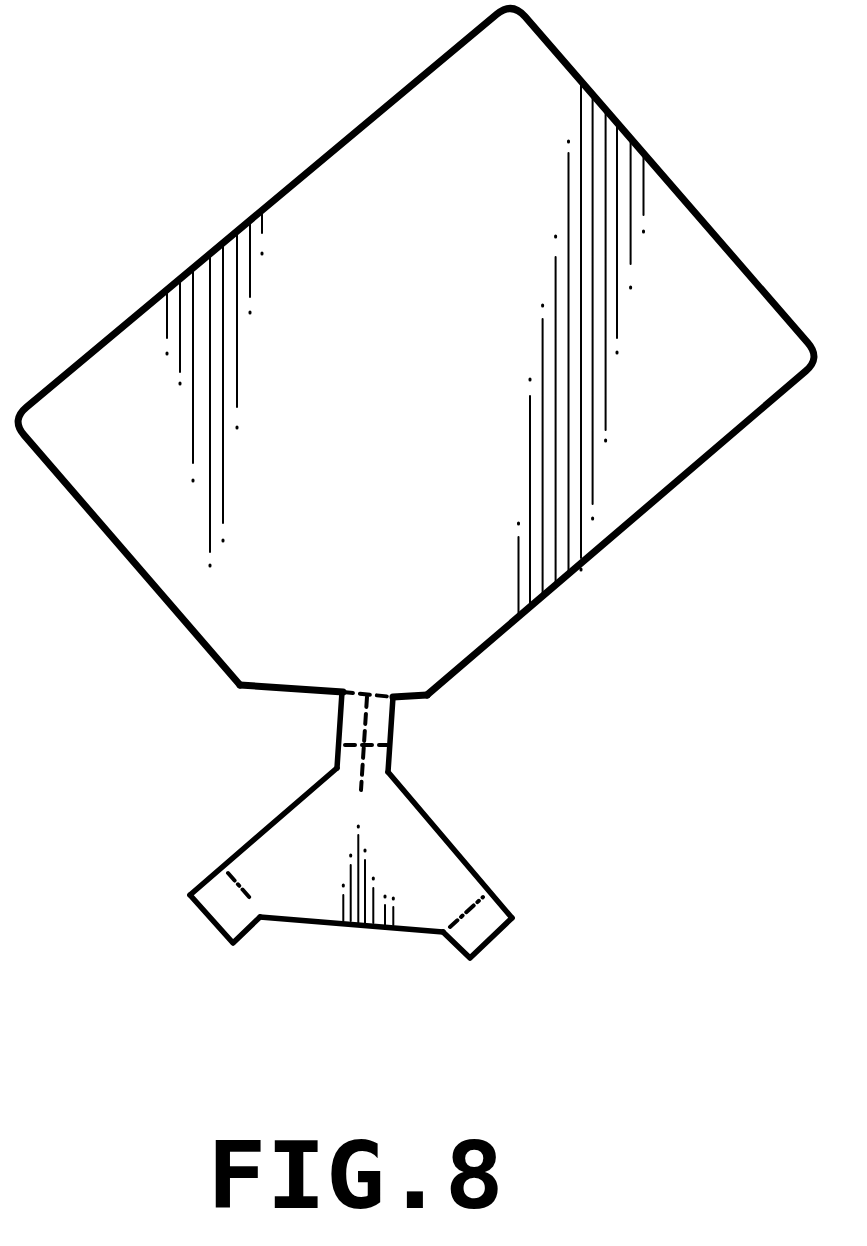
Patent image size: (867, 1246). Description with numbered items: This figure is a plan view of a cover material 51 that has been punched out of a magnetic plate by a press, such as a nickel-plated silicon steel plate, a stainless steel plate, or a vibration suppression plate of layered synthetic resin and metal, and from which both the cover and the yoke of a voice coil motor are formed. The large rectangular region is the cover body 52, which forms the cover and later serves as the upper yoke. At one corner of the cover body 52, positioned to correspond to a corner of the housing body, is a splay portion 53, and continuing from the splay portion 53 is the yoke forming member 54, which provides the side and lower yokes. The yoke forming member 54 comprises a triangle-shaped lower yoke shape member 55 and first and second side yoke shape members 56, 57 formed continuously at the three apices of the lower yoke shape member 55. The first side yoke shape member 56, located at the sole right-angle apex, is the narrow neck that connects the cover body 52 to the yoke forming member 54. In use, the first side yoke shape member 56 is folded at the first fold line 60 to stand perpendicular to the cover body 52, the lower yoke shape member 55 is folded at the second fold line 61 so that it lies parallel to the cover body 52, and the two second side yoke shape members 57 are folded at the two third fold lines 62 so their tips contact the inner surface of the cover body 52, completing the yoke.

The cover material 51 is at (416, 463).
The cover body 52 is at (507, 632).
The splay portion 53 is at (252, 686).
The yoke forming member 54 is at (364, 839).
The lower yoke shape member 55 is at (330, 927).
The first side yoke shape member 56 is at (362, 722).
The second side yoke shape members 57 is at (487, 923).
The first fold line 60 is at (369, 692).
The second fold line 61 is at (358, 762).
The third fold line 62 is at (463, 913).